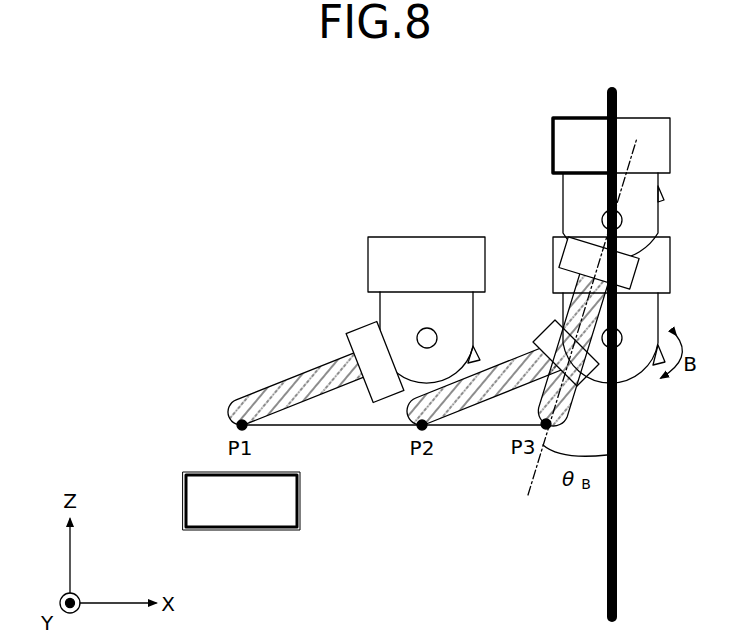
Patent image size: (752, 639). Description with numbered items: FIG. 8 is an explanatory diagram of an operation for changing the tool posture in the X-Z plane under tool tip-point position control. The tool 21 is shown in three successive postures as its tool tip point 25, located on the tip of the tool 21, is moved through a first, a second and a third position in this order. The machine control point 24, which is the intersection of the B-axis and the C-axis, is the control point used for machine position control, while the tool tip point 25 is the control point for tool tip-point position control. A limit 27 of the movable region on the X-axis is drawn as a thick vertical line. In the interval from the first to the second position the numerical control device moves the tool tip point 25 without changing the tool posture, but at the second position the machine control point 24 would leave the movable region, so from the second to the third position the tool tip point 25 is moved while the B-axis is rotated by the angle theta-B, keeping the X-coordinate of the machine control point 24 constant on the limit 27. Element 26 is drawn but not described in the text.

The tool 21 is at (636, 118).
The machine control point 24 is at (419, 331).
The tool tip point 25 is at (228, 413).
The workpiece 26 is at (303, 497).
The limit 27 is at (617, 548).